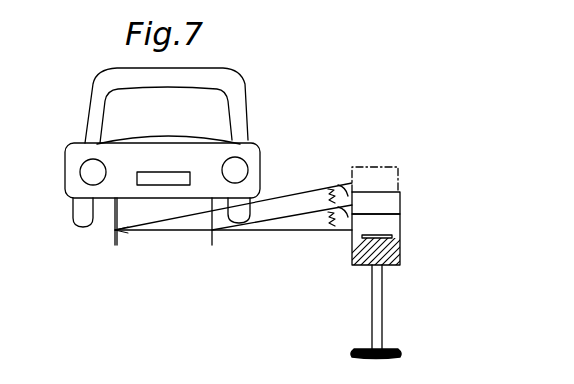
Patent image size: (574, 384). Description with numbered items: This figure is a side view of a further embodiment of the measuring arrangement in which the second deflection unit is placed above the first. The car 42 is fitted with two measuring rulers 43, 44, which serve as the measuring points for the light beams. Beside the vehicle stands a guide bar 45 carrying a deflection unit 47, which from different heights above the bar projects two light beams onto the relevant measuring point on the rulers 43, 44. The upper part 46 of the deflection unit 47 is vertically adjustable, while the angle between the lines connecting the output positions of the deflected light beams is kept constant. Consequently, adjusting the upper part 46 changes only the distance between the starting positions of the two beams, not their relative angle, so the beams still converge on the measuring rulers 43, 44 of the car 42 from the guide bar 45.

The car 42 is at (233, 91).
The measuring ruler 43 is at (212, 243).
The measuring ruler 44 is at (117, 243).
The guide bar 45 is at (400, 250).
The upper part 46 is at (400, 185).
The deflection unit 47 is at (400, 215).